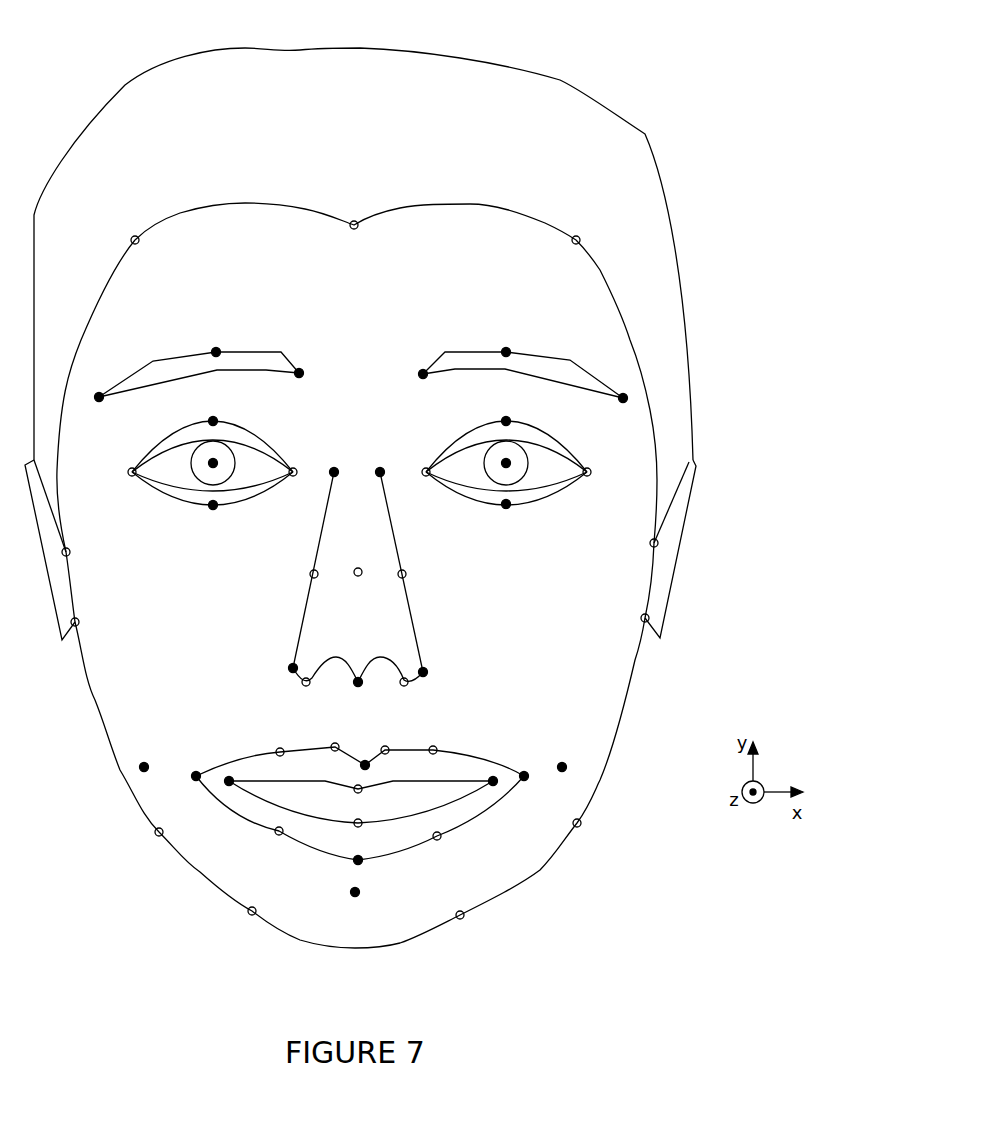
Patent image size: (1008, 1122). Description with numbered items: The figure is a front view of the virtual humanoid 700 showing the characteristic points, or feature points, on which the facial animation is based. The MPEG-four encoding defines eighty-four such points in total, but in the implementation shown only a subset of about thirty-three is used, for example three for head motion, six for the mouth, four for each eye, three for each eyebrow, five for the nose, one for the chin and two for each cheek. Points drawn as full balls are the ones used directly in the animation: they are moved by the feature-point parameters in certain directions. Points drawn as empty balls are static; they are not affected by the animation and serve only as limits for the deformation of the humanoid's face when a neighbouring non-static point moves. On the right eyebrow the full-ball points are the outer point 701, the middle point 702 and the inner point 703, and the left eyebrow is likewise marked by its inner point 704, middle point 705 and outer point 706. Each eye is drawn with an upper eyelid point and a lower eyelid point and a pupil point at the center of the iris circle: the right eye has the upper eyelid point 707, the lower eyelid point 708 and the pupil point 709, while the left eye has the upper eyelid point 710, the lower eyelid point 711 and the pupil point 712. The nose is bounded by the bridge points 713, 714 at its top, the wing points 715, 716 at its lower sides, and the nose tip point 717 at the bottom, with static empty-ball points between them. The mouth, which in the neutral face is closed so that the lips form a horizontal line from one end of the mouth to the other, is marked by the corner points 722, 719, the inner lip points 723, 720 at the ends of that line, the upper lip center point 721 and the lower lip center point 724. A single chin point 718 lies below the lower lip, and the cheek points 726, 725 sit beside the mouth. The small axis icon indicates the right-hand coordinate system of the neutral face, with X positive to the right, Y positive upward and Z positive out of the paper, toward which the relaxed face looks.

The virtual humanoid 700 is at (600, 107).
The right eyebrow outer feature point 701 is at (622, 397).
The right eyebrow middle feature point 702 is at (504, 350).
The right eyebrow inner feature point 703 is at (423, 372).
The left eyebrow inner feature point 704 is at (301, 371).
The left eyebrow middle feature point 705 is at (213, 349).
The left eyebrow outer feature point 706 is at (99, 394).
The right eye upper eyelid feature point 707 is at (505, 421).
The right eye lower eyelid feature point 708 is at (506, 505).
The right eye pupil feature point 709 is at (506, 463).
The left eye upper eyelid feature point 710 is at (216, 421).
The left eye lower eyelid feature point 711 is at (215, 505).
The left eye pupil feature point 712 is at (213, 463).
The left nose bridge feature point 713 is at (334, 470).
The right nose bridge feature point 714 is at (380, 470).
The left nose wing feature point 715 is at (293, 667).
The right nose wing feature point 716 is at (424, 672).
The nose tip feature point 717 is at (358, 683).
The chin feature point 718 is at (357, 892).
The right mouth corner feature point 719 is at (524, 775).
The right inner lip feature point 720 is at (494, 783).
The upper lip center feature point 721 is at (365, 765).
The left mouth corner feature point 722 is at (197, 775).
The left inner lip feature point 723 is at (229, 782).
The lower lip center feature point 724 is at (338, 856).
The right cheek feature point 725 is at (562, 766).
The left cheek feature point 726 is at (144, 766).